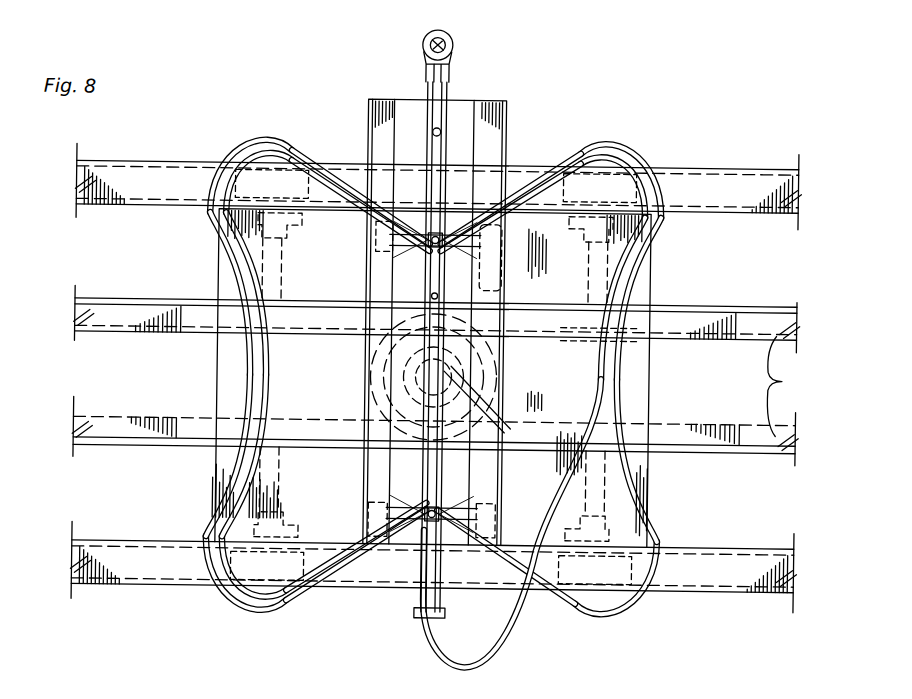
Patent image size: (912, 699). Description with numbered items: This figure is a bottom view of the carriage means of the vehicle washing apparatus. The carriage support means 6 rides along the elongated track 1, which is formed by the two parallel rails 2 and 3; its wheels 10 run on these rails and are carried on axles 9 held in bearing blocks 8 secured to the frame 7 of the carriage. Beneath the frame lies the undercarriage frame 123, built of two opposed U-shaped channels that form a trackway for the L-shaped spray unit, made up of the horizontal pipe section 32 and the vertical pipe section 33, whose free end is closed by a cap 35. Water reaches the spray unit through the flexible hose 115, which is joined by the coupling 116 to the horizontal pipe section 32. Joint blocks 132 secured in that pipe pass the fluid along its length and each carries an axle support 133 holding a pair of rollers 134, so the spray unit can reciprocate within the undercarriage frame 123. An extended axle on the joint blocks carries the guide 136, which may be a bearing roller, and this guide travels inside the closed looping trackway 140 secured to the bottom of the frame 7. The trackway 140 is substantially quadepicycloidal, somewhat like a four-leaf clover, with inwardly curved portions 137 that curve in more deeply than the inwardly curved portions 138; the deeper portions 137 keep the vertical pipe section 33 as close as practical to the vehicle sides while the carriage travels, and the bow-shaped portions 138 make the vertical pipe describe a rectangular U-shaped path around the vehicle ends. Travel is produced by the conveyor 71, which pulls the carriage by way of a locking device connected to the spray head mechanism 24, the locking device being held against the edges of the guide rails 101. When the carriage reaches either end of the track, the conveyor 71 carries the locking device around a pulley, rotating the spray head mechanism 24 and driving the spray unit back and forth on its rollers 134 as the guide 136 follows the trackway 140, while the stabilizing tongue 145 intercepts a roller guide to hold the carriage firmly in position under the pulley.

The elongated track 1 is at (117, 173).
The rail 2 is at (160, 172).
The rail 3 is at (115, 550).
The carriage support means 6 is at (575, 355).
The frame 7 is at (580, 293).
The bearing block 8 is at (300, 232).
The axle 9 is at (298, 272).
The wheel 10 is at (249, 160).
The spray head mechanism 24 is at (368, 381).
The horizontal pipe section 32 is at (421, 72).
The vertical pipe section 33 is at (436, 33).
The cap 35 is at (450, 38).
The conveyor 71 is at (758, 293).
The guide rail 101 is at (449, 382).
The flexible hose 115 is at (469, 665).
The coupling 116 is at (443, 613).
The undercarriage frame 123 is at (505, 133).
The joint block 132 is at (428, 247).
The axle support 133 is at (480, 240).
The roller 134 is at (388, 256).
The guide 136 is at (439, 130).
The inwardly curved portion 137 is at (566, 160).
The inwardly curved portion 138 is at (365, 142).
The looping trackway 140 is at (247, 377).
The stabilizing tongue 145 is at (305, 365).